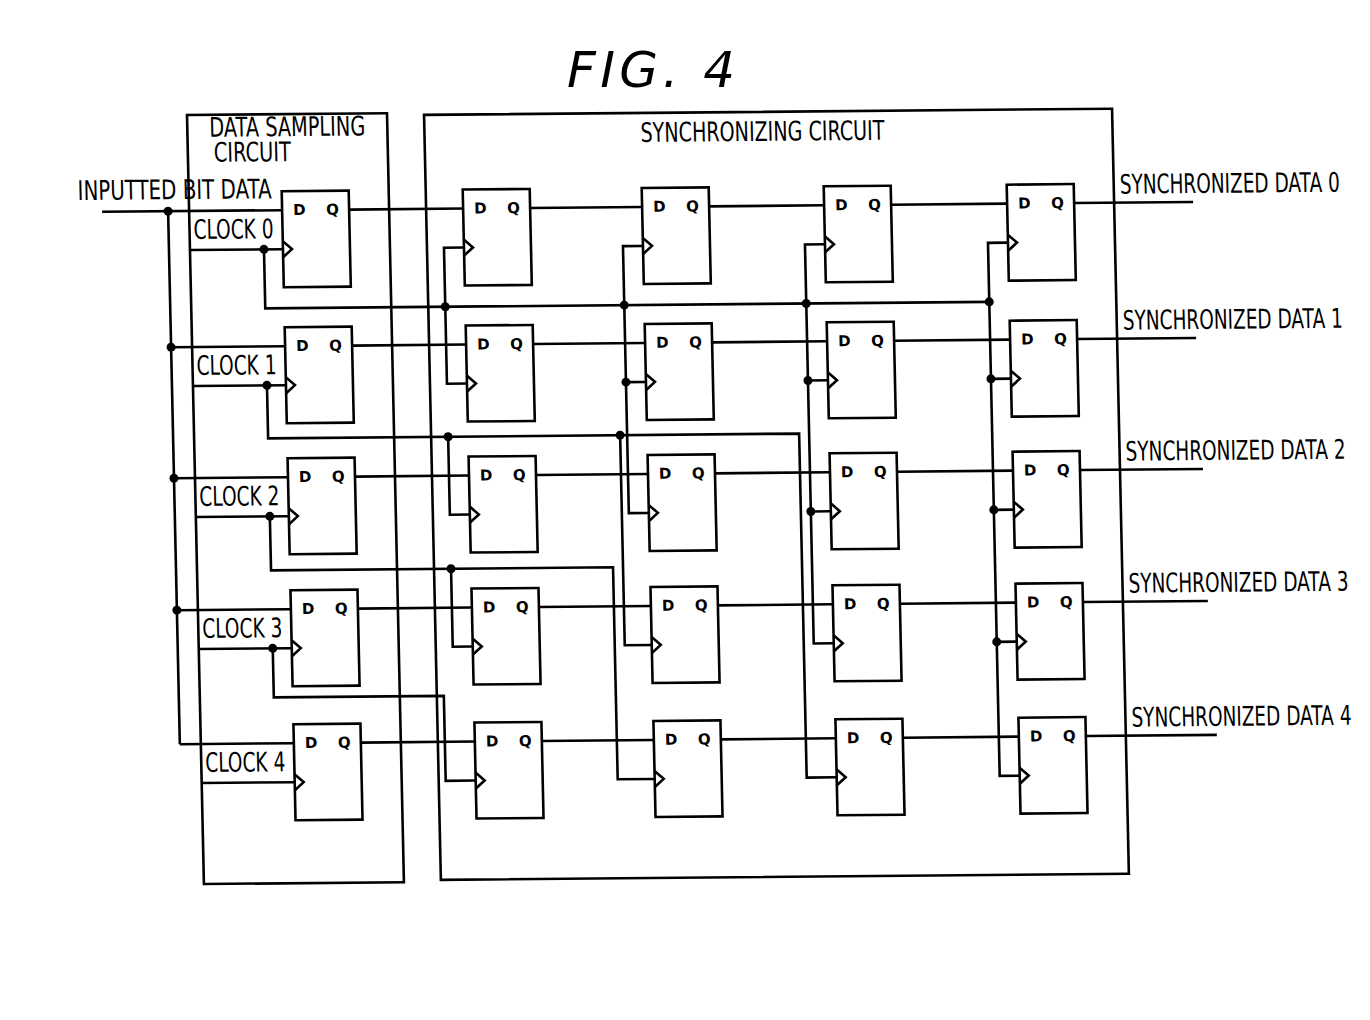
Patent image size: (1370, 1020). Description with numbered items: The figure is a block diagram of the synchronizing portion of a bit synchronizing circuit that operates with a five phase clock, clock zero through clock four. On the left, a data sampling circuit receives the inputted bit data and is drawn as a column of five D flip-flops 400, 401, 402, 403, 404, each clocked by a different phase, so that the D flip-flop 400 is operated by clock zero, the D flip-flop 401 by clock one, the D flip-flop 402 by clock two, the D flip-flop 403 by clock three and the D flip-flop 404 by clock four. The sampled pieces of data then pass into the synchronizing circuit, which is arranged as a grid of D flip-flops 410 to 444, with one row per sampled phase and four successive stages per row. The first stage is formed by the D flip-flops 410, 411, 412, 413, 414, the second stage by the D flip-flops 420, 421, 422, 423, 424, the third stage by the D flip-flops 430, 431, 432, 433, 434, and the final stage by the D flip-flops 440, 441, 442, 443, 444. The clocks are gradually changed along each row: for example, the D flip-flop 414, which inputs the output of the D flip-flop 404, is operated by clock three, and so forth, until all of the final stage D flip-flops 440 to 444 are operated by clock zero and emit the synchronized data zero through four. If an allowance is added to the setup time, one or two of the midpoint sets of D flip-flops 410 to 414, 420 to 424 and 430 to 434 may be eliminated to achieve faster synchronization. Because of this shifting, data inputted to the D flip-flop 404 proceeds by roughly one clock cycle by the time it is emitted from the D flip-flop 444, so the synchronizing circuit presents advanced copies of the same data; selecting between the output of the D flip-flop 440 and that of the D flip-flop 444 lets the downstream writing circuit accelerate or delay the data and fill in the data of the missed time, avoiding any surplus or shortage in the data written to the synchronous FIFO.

The D flip-flop 400 is at (328, 168).
The D flip-flop 401 is at (285, 424).
The D flip-flop 402 is at (290, 554).
The D flip-flop 403 is at (295, 687).
The D flip-flop 404 is at (313, 822).
The D flip-flop 410 is at (528, 258).
The D flip-flop 411 is at (528, 396).
The D flip-flop 412 is at (528, 522).
The D flip-flop 413 is at (528, 654).
The D flip-flop 414 is at (528, 788).
The D flip-flop 420 is at (707, 258).
The D flip-flop 421 is at (707, 396).
The D flip-flop 422 is at (707, 522).
The D flip-flop 423 is at (707, 657).
The D flip-flop 424 is at (707, 788).
The D flip-flop 430 is at (889, 258).
The D flip-flop 431 is at (889, 390).
The D flip-flop 432 is at (889, 515).
The D flip-flop 433 is at (889, 650).
The D flip-flop 434 is at (889, 790).
The D flip-flop 440 is at (1072, 244).
The D flip-flop 441 is at (1072, 380).
The D flip-flop 442 is at (1072, 514).
The D flip-flop 443 is at (1072, 650).
The D flip-flop 444 is at (1072, 790).